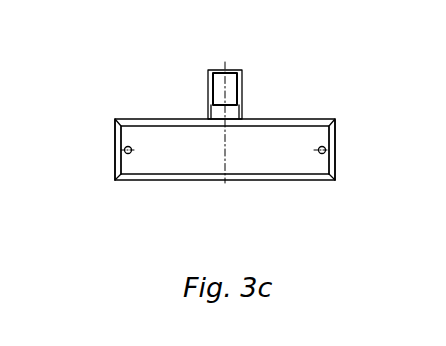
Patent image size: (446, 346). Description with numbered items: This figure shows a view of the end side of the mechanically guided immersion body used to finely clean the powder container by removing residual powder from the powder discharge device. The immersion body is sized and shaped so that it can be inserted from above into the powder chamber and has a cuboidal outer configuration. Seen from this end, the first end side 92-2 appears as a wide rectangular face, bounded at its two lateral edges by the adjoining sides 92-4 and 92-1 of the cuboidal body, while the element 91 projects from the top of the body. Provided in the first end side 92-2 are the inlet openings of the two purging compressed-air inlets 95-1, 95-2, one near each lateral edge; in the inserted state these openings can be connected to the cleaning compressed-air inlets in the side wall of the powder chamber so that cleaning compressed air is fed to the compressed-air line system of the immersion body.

The neck / connector socket 91 is at (222, 88).
The right side wall of housing 92-1 is at (335, 165).
The first end side 92-2 is at (172, 133).
The left side wall of housing 92-4 is at (114, 162).
The purging compressed-air inlet 95-1 is at (127, 148).
The purging compressed-air inlet 95-2 is at (324, 150).